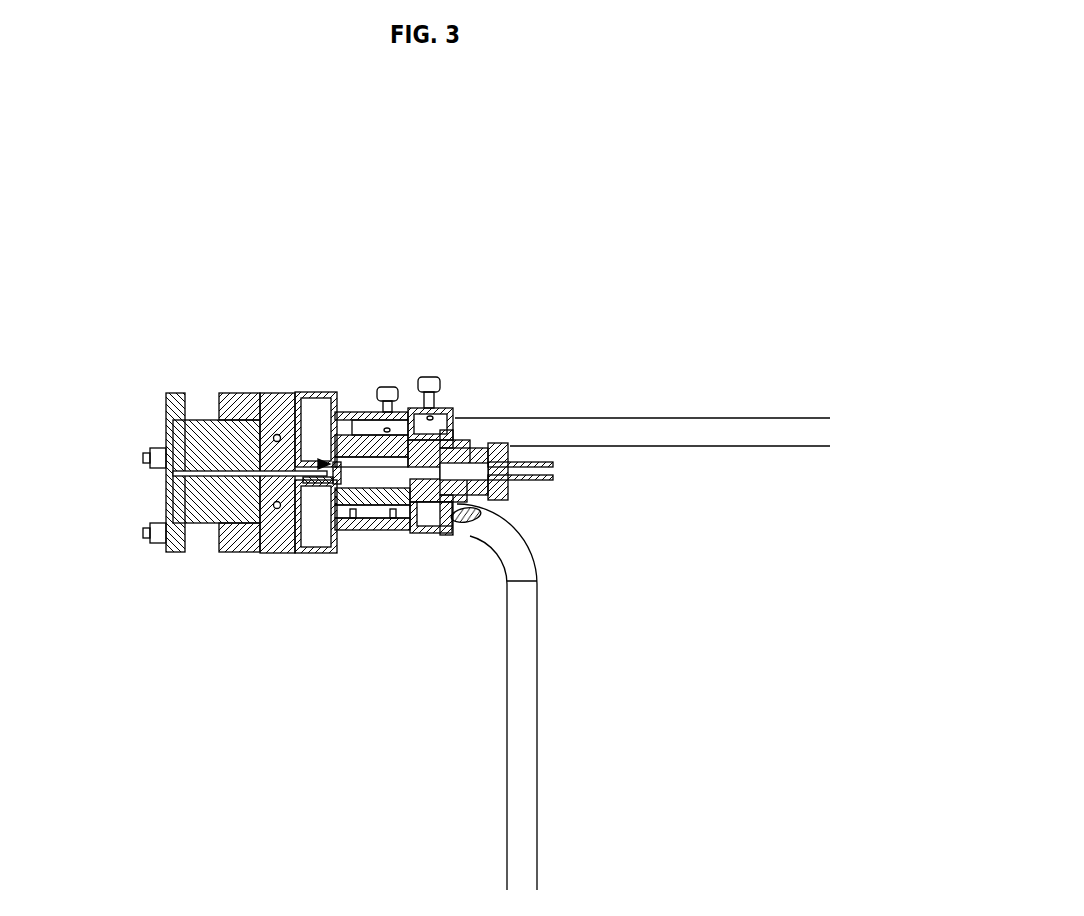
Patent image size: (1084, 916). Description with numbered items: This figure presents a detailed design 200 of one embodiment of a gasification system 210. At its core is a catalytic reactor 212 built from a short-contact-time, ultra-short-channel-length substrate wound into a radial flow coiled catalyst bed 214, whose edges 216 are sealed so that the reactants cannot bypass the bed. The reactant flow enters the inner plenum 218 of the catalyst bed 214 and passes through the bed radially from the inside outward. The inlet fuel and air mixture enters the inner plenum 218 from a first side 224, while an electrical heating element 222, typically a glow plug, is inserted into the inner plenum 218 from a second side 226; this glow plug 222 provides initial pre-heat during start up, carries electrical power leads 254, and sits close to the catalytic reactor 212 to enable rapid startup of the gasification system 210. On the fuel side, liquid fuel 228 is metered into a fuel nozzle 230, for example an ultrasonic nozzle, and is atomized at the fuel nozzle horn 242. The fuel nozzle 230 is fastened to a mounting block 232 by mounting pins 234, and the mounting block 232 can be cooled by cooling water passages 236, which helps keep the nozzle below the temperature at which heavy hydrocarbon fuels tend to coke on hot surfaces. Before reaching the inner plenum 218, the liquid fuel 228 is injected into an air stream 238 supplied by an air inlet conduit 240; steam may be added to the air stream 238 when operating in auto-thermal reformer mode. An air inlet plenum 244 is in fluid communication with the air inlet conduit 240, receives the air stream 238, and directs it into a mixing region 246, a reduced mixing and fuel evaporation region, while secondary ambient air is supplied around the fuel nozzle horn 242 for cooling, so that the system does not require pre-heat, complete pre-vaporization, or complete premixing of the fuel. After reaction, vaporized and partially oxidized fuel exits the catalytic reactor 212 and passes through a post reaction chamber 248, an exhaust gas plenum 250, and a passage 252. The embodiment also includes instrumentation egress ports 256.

The detailed design 200 is at (467, 325).
The gasification system 210 is at (156, 382).
The catalytic reactor 212 is at (372, 496).
The radial flow coiled catalyst bed 214 is at (400, 498).
The edges 216 is at (393, 505).
The inner plenum 218 is at (328, 420).
The electrical heating element 222 is at (326, 484).
The first side 224 is at (322, 466).
The second side 226 is at (407, 460).
The liquid fuel 228 is at (170, 474).
The fuel nozzle 230 is at (197, 493).
The mounting block 232 is at (236, 393).
The mounting pins 234 is at (206, 533).
The cooling water passages 236 is at (261, 393).
The air stream 238 is at (276, 497).
The air inlet conduit 240 is at (588, 430).
The fuel nozzle horn 242 is at (300, 440).
The air inlet plenum 244 is at (333, 437).
The mixing region 246 is at (318, 476).
The post reaction chamber 248 is at (380, 498).
The exhaust gas plenum 250 is at (437, 515).
The passage 252 is at (523, 612).
The electrical power leads 254 is at (540, 478).
The instrumentation egress ports 256 is at (437, 382).